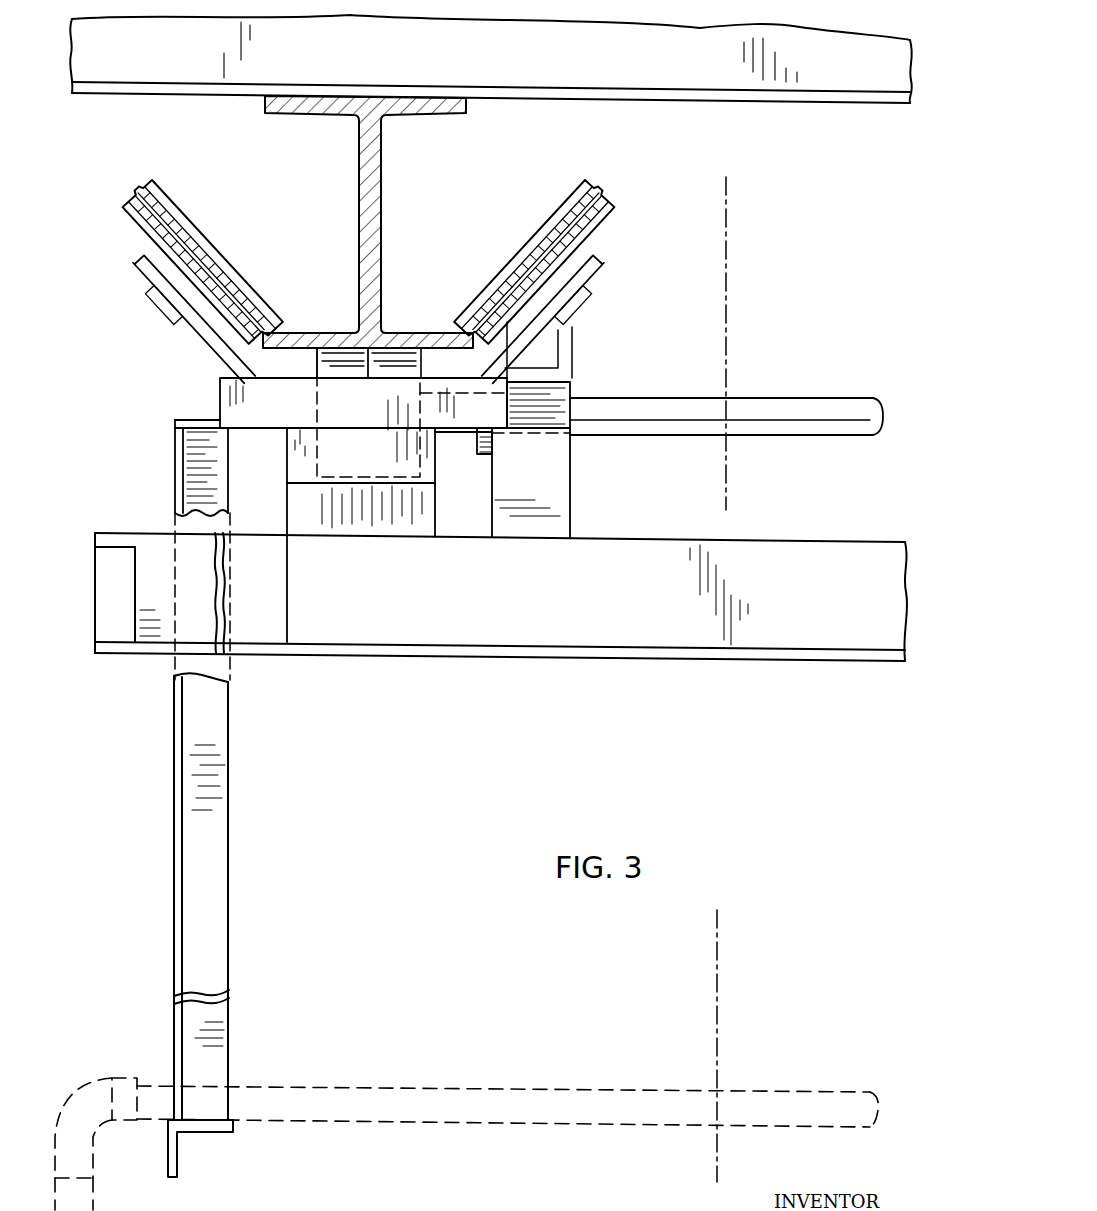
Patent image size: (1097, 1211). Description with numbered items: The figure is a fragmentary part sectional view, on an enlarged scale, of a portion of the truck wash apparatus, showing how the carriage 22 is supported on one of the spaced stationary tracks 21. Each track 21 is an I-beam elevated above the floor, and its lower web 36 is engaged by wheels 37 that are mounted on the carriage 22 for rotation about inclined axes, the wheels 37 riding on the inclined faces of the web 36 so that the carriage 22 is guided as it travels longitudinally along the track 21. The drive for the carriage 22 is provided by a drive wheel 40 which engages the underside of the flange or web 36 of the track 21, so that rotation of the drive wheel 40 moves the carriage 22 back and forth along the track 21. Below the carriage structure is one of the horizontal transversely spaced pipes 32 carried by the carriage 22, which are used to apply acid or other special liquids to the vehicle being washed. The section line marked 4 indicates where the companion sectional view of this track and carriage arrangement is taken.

The stationary tracks 21 is at (382, 195).
The wheels 37 is at (228, 270).
The lower web 36 is at (398, 340).
The drive wheel 40 is at (338, 362).
The carriage 22 is at (587, 333).
The horizontal transversely spaced pipes 32 is at (457, 1086).
The section line 4- 4 is at (726, 177).